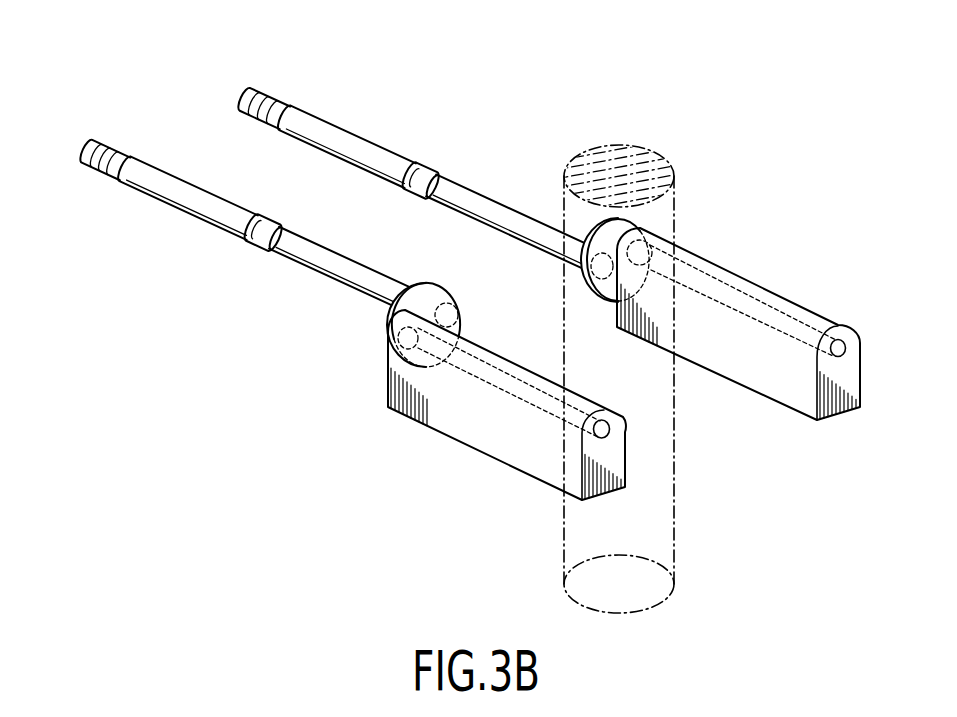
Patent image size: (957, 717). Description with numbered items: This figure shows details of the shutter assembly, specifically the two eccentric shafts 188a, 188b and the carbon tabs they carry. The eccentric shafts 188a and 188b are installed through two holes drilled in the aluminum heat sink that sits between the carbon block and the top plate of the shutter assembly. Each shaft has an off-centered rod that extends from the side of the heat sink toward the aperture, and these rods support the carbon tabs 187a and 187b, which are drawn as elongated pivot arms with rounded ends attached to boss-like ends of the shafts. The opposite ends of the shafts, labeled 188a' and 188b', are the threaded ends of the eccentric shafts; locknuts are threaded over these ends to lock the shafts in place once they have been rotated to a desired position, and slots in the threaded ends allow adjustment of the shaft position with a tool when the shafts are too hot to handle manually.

The carbon tab 187a is at (807, 308).
The carbon tab 187b is at (503, 440).
The eccentric shaft 188a is at (510, 186).
The upper threaded rod end 188a' is at (330, 100).
The eccentric shaft 188b is at (336, 291).
The lower threaded rod end 188b' is at (150, 151).